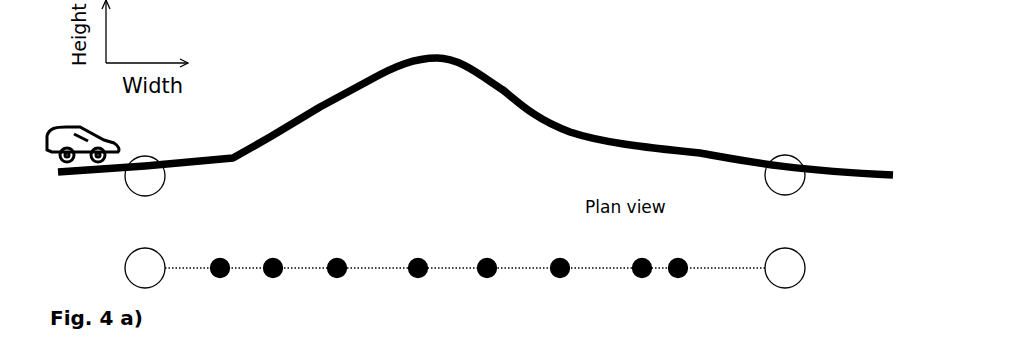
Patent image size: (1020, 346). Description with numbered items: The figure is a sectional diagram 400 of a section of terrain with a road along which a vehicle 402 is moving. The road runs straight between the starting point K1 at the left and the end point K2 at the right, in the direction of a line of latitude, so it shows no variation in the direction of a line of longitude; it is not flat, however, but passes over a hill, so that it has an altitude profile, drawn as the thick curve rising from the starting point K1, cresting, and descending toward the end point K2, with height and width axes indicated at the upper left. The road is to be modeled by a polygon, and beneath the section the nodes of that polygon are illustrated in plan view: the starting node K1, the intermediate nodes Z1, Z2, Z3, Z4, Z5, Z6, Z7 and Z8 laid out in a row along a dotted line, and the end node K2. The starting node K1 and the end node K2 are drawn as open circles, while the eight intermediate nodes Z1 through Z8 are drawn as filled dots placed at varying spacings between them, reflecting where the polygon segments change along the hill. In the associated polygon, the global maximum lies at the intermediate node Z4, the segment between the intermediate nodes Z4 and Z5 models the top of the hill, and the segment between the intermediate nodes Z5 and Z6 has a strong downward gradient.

The sectional diagram 400 is at (638, 82).
The vehicle 402 is at (58, 163).
The starting node K1 is at (145, 204).
The end node K2 is at (785, 203).
The intermediate node Z1 is at (227, 253).
The intermediate node Z2 is at (279, 253).
The intermediate node Z3 is at (341, 253).
The intermediate node Z4 is at (424, 253).
The intermediate node Z5 is at (490, 253).
The intermediate node Z6 is at (567, 253).
The intermediate node Z7 is at (649, 253).
The intermediate node Z8 is at (687, 253).